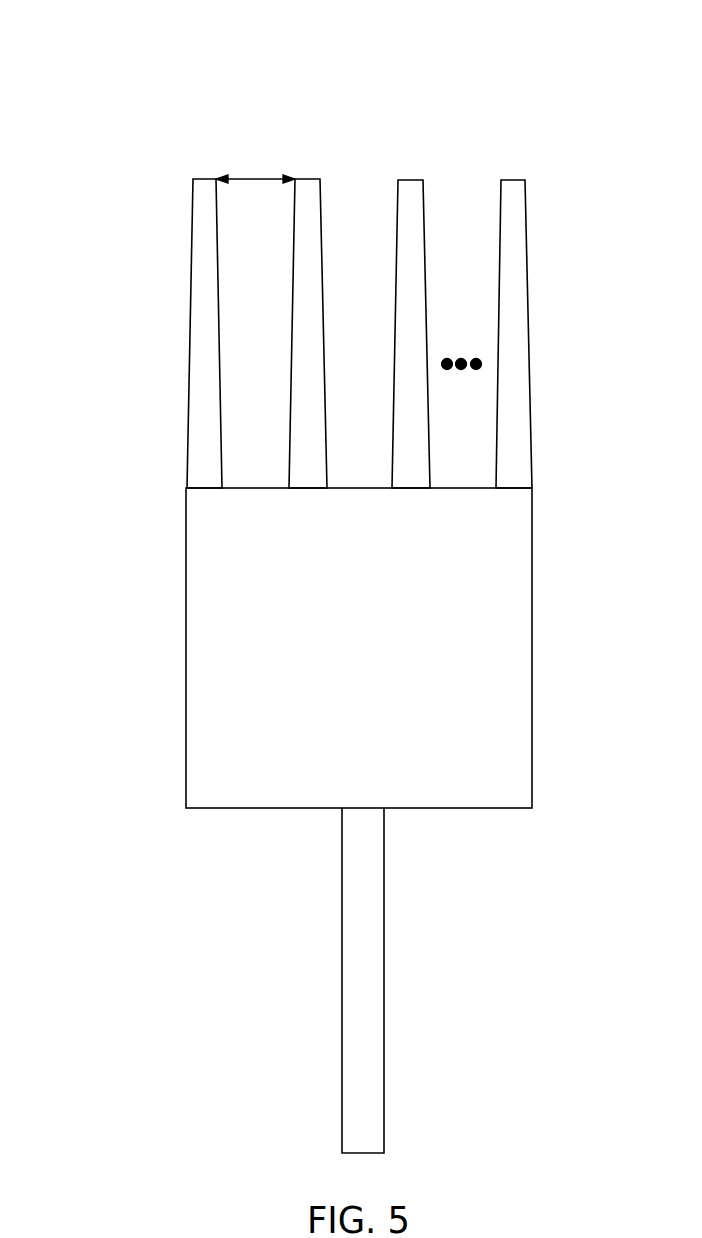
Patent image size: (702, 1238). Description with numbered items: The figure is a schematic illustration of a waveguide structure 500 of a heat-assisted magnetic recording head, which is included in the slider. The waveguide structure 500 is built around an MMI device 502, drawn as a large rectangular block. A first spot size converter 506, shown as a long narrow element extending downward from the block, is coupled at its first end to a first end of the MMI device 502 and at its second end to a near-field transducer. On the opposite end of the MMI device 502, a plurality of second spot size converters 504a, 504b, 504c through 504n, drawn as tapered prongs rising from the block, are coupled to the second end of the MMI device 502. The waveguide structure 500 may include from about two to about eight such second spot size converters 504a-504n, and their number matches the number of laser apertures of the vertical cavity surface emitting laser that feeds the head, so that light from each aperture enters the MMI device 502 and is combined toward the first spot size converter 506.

The waveguide structure 500 is at (195, 51).
The MMI device 502 is at (389, 666).
The second spot size converter 504a is at (201, 178).
The second spot size converter 504b is at (315, 178).
The second spot size converter 504c is at (413, 179).
The second spot size converter 504n is at (515, 179).
The first spot size converter 506 is at (342, 941).